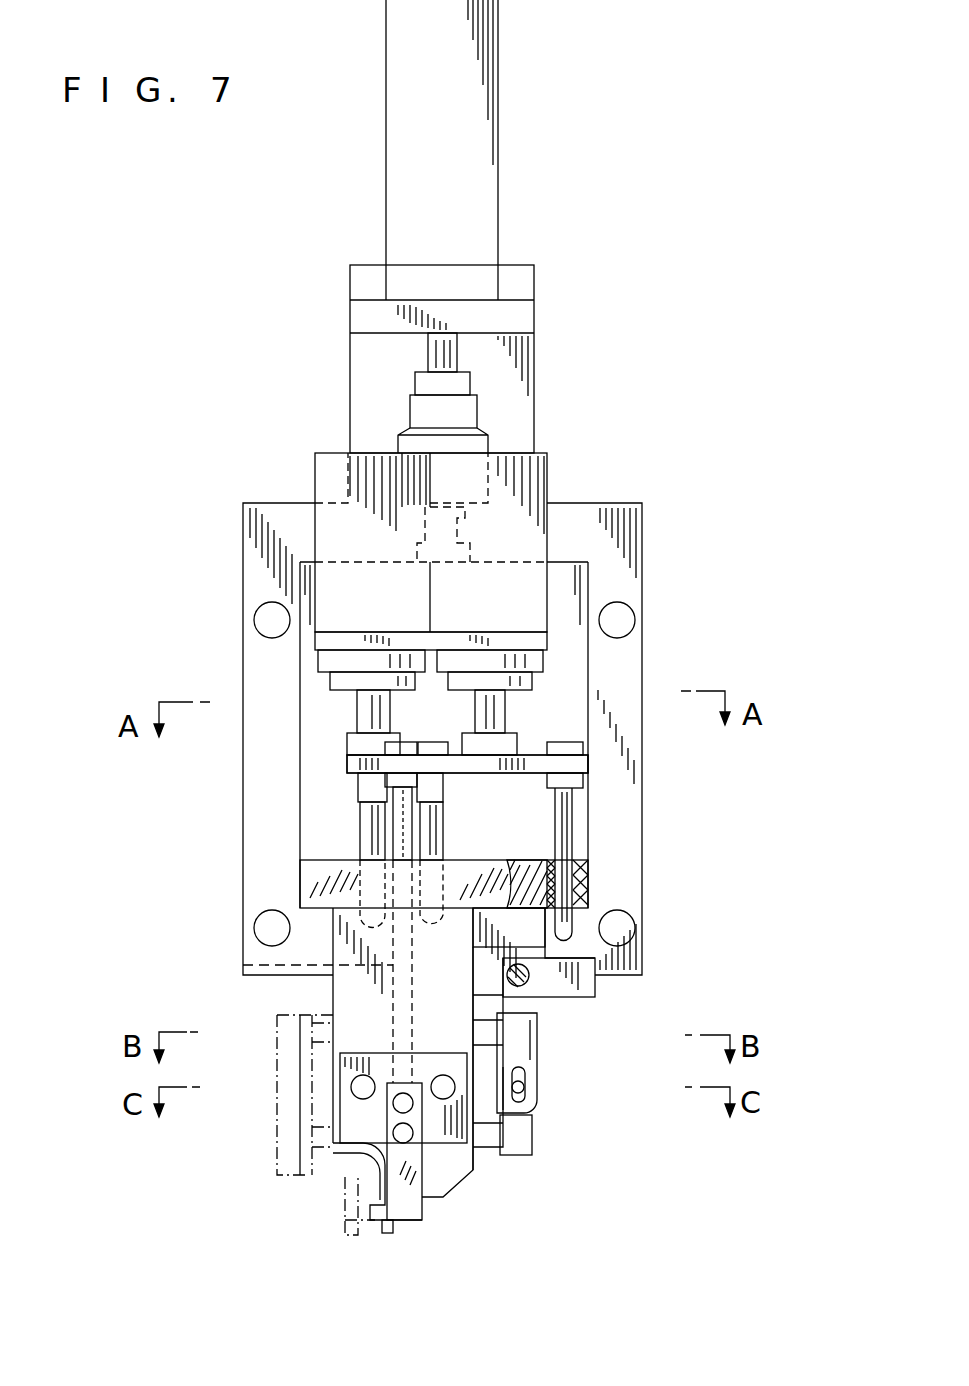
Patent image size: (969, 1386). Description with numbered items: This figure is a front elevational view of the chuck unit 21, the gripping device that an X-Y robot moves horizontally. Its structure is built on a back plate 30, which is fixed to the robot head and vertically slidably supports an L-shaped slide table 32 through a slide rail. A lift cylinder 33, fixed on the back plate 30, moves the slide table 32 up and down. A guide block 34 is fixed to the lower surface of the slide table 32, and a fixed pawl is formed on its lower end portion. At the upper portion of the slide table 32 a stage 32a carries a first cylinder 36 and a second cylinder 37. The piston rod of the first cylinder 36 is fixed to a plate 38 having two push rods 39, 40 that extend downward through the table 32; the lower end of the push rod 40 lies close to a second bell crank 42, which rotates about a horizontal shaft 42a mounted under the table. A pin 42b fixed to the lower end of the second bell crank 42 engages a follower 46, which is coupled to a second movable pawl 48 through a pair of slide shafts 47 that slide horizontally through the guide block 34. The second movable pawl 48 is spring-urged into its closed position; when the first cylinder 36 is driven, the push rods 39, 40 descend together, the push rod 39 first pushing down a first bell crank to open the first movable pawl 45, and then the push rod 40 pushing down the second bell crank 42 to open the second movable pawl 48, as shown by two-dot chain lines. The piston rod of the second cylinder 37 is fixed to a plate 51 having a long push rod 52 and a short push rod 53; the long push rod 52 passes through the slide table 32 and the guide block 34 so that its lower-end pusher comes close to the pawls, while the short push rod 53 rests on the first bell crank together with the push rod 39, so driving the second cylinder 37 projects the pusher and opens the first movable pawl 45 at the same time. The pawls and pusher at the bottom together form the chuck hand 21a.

The chuck unit 21 is at (670, 253).
The chuck hand 21a is at (348, 1236).
The back plate 30 is at (624, 550).
The slide table 32 is at (310, 887).
The stage 32a is at (320, 640).
The lift cylinder 33 is at (492, 130).
The guide block 34 is at (345, 998).
The first cylinder 36 is at (517, 473).
The second cylinder 37 is at (340, 462).
The plate 38 is at (530, 770).
The push rod 39 is at (440, 833).
The push rod 40 is at (570, 830).
The second bell crank 42 is at (578, 982).
The horizontal shaft 42a is at (528, 985).
The pin 42b is at (528, 1087).
The first movable pawl 45 is at (407, 1220).
The follower 46 is at (525, 1135).
The slide shafts 47 is at (485, 1150).
The second movable pawl 48 is at (318, 1168).
The plate 51 is at (353, 767).
The long push rod 52 is at (243, 968).
The short push rod 53 is at (363, 833).